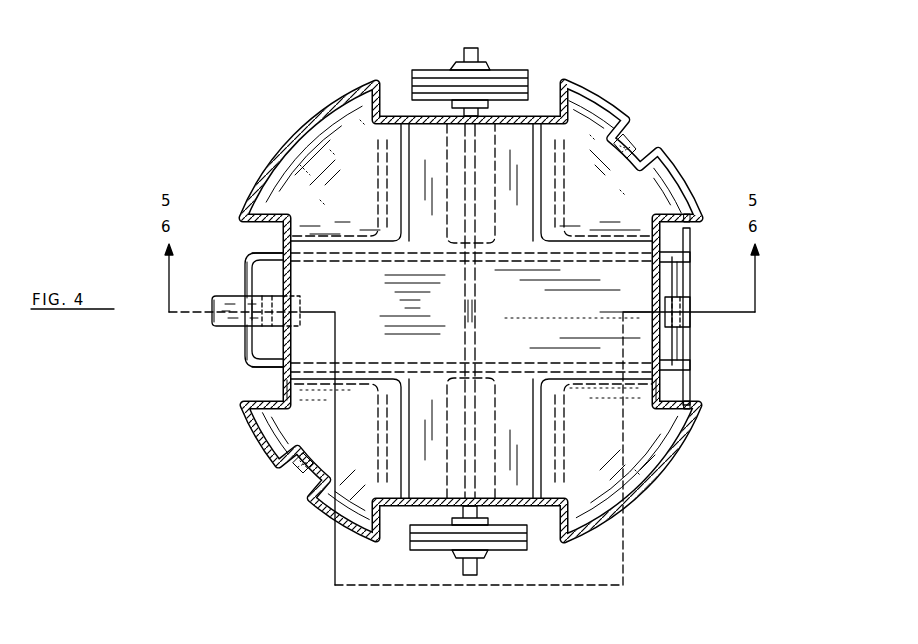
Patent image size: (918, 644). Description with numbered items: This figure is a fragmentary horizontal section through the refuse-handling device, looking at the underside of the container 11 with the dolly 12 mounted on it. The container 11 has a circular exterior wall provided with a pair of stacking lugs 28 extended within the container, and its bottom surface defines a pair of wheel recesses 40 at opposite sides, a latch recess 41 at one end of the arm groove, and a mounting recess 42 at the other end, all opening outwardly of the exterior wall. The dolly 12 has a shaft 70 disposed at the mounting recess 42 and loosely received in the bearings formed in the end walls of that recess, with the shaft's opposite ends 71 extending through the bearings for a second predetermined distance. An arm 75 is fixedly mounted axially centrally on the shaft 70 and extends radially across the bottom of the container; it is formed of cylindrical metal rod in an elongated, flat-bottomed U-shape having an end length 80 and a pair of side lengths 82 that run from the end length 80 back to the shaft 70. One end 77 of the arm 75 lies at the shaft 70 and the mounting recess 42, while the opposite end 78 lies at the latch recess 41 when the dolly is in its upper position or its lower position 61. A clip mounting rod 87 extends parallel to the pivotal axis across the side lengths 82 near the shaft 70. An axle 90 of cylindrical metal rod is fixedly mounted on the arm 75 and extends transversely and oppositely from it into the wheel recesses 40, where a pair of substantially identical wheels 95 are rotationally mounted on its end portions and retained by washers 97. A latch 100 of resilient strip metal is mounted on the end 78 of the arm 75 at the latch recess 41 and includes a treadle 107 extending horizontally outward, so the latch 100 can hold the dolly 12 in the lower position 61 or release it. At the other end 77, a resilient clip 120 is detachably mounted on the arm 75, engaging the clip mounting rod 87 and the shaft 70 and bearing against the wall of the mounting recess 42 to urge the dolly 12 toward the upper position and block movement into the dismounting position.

The container 11 is at (636, 92).
The dolly 12 is at (518, 248).
The stacking lugs 28 is at (636, 170).
The wheel recesses 40 is at (544, 86).
The latch recess 41 is at (249, 382).
The mounting recess 42 is at (696, 392).
The lower position 61 is at (242, 259).
The shaft 70 is at (696, 360).
The opposite ends 71 is at (690, 221).
The arm 75 is at (242, 360).
The end 77 is at (256, 252).
The opposite end 78 is at (673, 262).
The end length 80 is at (243, 335).
The side lengths 82 is at (270, 252).
The clip mounting rod 87 is at (679, 278).
The axle 90 is at (465, 289).
The wheels 95 is at (498, 68).
The washers 97 is at (470, 100).
The latch 100 is at (243, 290).
The treadle 107 is at (214, 322).
The resilient clip 120 is at (694, 304).